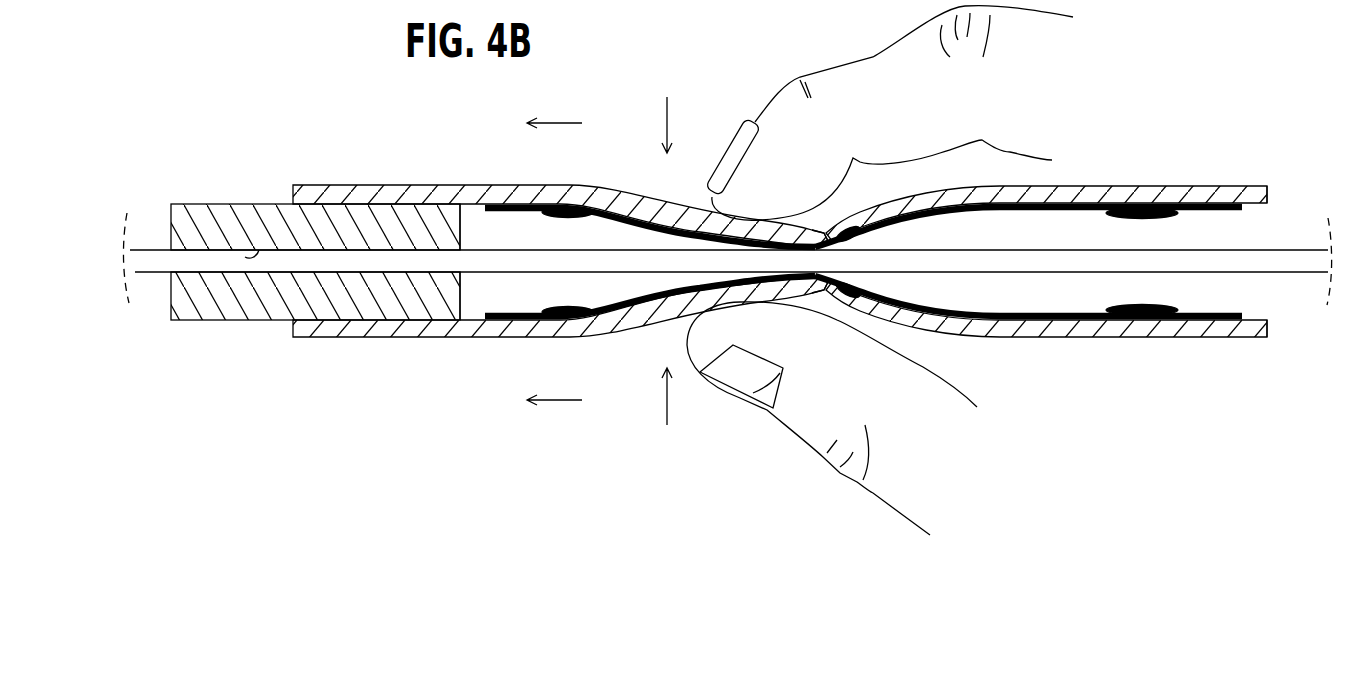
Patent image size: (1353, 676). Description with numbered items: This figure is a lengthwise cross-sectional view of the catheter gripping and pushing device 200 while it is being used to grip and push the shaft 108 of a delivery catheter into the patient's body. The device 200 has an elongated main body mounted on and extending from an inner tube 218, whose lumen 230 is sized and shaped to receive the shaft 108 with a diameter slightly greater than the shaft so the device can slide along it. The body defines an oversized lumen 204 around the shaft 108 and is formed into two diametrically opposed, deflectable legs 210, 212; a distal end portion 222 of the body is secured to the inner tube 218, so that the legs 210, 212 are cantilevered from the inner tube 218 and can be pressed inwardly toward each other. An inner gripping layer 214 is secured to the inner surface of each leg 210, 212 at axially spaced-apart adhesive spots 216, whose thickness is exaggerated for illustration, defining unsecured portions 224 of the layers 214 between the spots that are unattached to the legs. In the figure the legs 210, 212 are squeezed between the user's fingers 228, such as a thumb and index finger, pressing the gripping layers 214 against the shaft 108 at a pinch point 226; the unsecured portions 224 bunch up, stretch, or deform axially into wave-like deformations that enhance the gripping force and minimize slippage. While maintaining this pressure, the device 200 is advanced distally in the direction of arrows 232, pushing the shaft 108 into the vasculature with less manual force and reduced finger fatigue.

The shaft 108 is at (1283, 273).
The pushing device 200 is at (1076, 271).
The lumen 204 is at (1243, 233).
The leg 210 is at (1105, 185).
The leg 212 is at (1220, 338).
The gripping layer 214 is at (1038, 205).
The adhesive spots 216 is at (587, 206).
The inner tube 218 is at (201, 206).
The distal end portion 222 is at (382, 185).
The unsecured portions 224 is at (780, 233).
The pinch point 226 is at (838, 284).
The fingers 228 is at (728, 160).
The lumen 230 is at (259, 250).
The arrows 232 is at (566, 122).